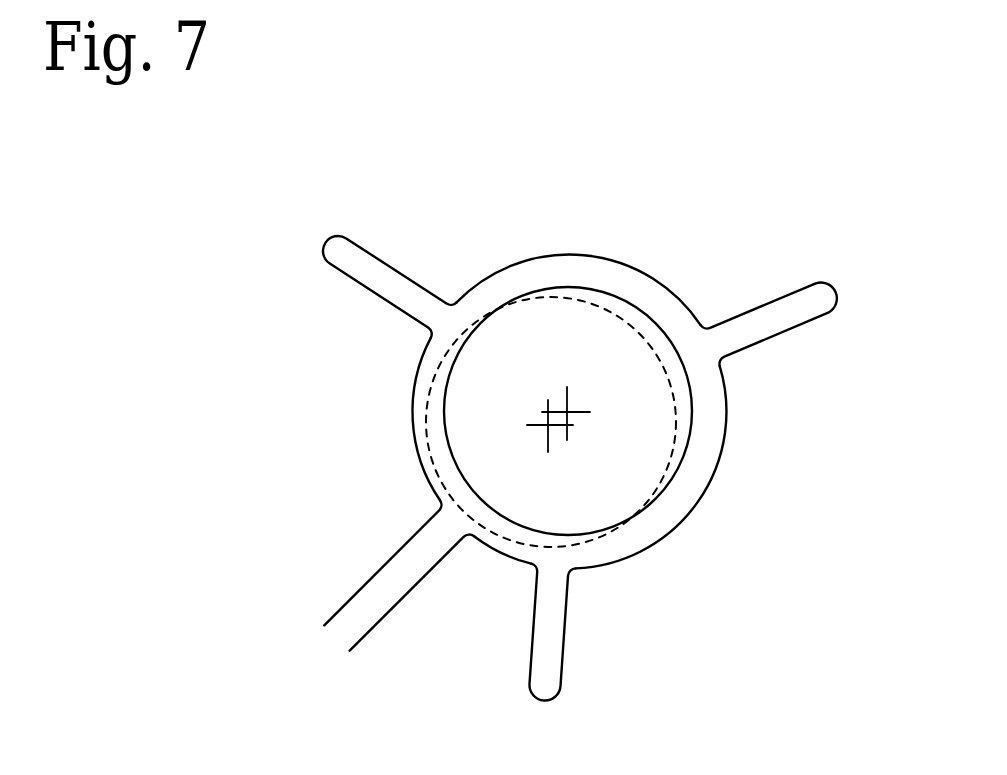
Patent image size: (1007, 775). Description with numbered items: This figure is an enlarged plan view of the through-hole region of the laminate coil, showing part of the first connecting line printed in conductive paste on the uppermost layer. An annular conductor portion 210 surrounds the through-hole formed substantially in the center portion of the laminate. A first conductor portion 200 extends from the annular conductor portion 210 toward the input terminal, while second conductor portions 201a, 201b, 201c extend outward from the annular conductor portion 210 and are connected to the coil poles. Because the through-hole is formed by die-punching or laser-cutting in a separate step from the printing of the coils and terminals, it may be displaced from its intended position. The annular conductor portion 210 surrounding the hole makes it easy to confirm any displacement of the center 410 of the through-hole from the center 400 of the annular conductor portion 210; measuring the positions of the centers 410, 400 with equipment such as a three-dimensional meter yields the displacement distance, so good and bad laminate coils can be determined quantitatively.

The first conductor portion 200 is at (393, 583).
The second conductor portion 201a is at (375, 273).
The second conductor portion 201b is at (780, 317).
The second conductor portion 201c is at (548, 640).
The annular conductor portion 210 is at (618, 280).
The center of the annular conductor portion 400 is at (567, 412).
The center of the through-hole 410 is at (548, 425).